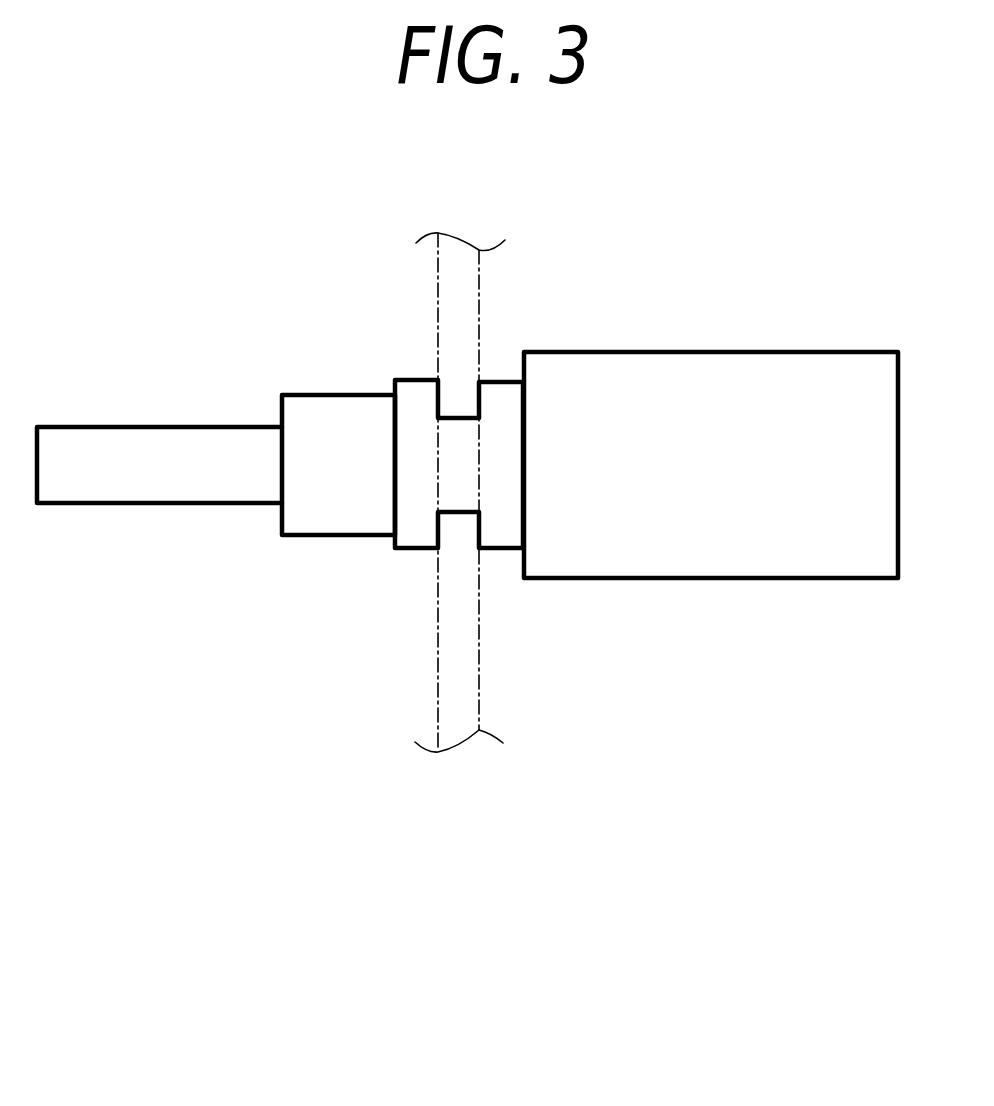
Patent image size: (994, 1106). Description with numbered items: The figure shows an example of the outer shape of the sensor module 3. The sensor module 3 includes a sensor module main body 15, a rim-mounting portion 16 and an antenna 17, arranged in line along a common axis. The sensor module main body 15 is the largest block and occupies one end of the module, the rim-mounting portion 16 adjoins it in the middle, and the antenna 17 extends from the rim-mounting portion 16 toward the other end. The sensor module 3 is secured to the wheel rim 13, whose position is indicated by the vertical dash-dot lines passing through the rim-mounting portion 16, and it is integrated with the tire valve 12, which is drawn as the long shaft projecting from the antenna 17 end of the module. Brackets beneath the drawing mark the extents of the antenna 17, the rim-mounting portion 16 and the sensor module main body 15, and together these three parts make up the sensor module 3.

The sensor module 3 is at (590, 653).
The tire valve 12 is at (138, 473).
The wheel rim 13 is at (438, 313).
The sensor module main body 15 is at (711, 615).
The rim-mounting portion 16 is at (523, 800).
The antenna 17 is at (395, 800).